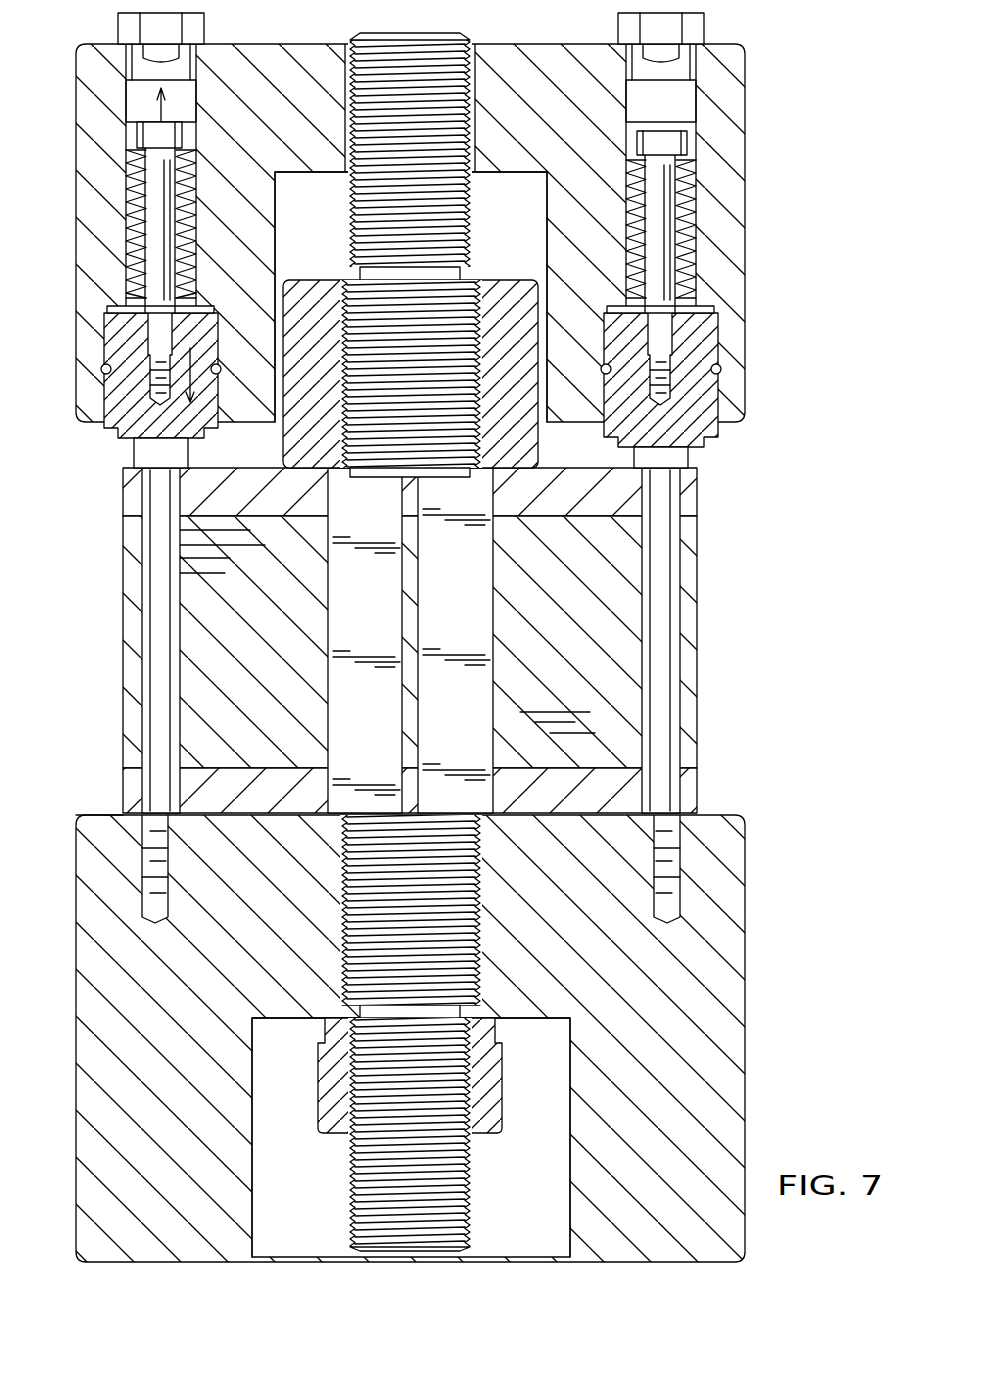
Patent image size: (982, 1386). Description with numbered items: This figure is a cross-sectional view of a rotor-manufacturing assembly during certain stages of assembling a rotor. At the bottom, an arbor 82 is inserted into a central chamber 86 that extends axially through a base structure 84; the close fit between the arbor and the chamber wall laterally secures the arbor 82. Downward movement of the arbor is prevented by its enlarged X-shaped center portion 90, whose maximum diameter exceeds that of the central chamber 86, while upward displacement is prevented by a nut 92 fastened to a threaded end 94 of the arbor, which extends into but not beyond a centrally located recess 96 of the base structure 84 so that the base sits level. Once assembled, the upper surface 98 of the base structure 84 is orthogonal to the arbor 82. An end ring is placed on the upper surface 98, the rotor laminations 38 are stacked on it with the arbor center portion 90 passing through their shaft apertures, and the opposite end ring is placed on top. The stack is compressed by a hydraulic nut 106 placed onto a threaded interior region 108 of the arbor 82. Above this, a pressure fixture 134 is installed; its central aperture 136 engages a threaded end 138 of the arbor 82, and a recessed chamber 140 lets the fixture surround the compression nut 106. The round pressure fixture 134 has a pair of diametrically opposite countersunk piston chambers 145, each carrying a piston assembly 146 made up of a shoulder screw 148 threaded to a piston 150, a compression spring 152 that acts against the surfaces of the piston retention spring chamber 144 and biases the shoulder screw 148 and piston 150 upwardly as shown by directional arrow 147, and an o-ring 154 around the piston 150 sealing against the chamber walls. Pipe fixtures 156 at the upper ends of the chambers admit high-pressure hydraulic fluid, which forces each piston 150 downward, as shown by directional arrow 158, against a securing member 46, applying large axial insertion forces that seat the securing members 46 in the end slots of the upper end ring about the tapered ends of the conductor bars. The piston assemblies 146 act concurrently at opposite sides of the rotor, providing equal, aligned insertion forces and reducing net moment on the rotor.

The rotor laminations 38 is at (130, 740).
The securing members 46 is at (690, 450).
The arbor 82 is at (365, 768).
The base structure 84 is at (740, 840).
The central chamber 86 is at (470, 980).
The center portion 90 is at (475, 617).
The nut 92 is at (495, 1102).
The threaded end 94 is at (478, 1210).
The recess 96 is at (288, 1240).
The upper surface 98 is at (103, 813).
The hydraulic nut 106 is at (560, 427).
The threaded interior region 108 is at (453, 357).
The pressure fixture 134 is at (735, 175).
The central aperture 136 is at (465, 42).
The threaded end 138 is at (352, 42).
The recessed chamber 140 is at (527, 226).
The piston retention spring chamber 144 is at (687, 162).
The piston chambers 145 is at (115, 412).
The piston assembly 146 is at (157, 222).
The directional arrow 147 is at (155, 117).
The shoulder screw 148 is at (150, 133).
The piston 150 is at (115, 393).
The compression spring 152 is at (127, 192).
The o-ring 154 is at (107, 373).
The pipe fixtures 156 is at (137, 30).
The directional arrow 158 is at (200, 372).